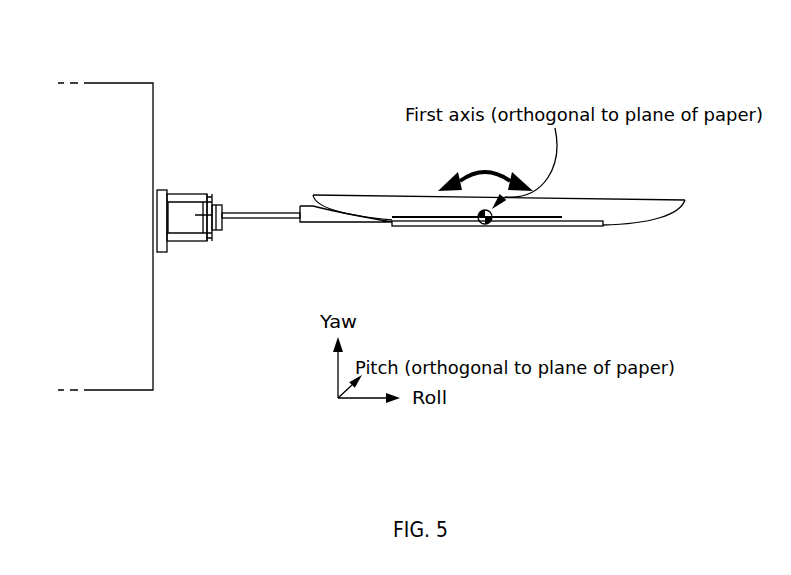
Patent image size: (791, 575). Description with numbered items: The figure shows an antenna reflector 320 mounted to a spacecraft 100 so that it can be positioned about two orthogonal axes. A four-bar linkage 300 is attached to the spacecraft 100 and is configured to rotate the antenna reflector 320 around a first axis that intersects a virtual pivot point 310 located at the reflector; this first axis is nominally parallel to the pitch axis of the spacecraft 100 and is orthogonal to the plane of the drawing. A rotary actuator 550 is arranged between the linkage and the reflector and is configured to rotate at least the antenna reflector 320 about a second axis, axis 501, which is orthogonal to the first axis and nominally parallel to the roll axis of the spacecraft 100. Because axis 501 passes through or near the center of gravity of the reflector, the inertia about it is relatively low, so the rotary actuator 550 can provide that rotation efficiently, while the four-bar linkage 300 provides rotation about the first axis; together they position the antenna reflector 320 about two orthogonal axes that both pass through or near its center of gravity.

The spacecraft 100 is at (100, 118).
The four-bar linkage 300 is at (183, 192).
The rotary actuator 550 is at (213, 205).
The axis 501 is at (260, 219).
The antenna reflector 320 is at (607, 208).
The virtual pivot point 310 is at (485, 224).